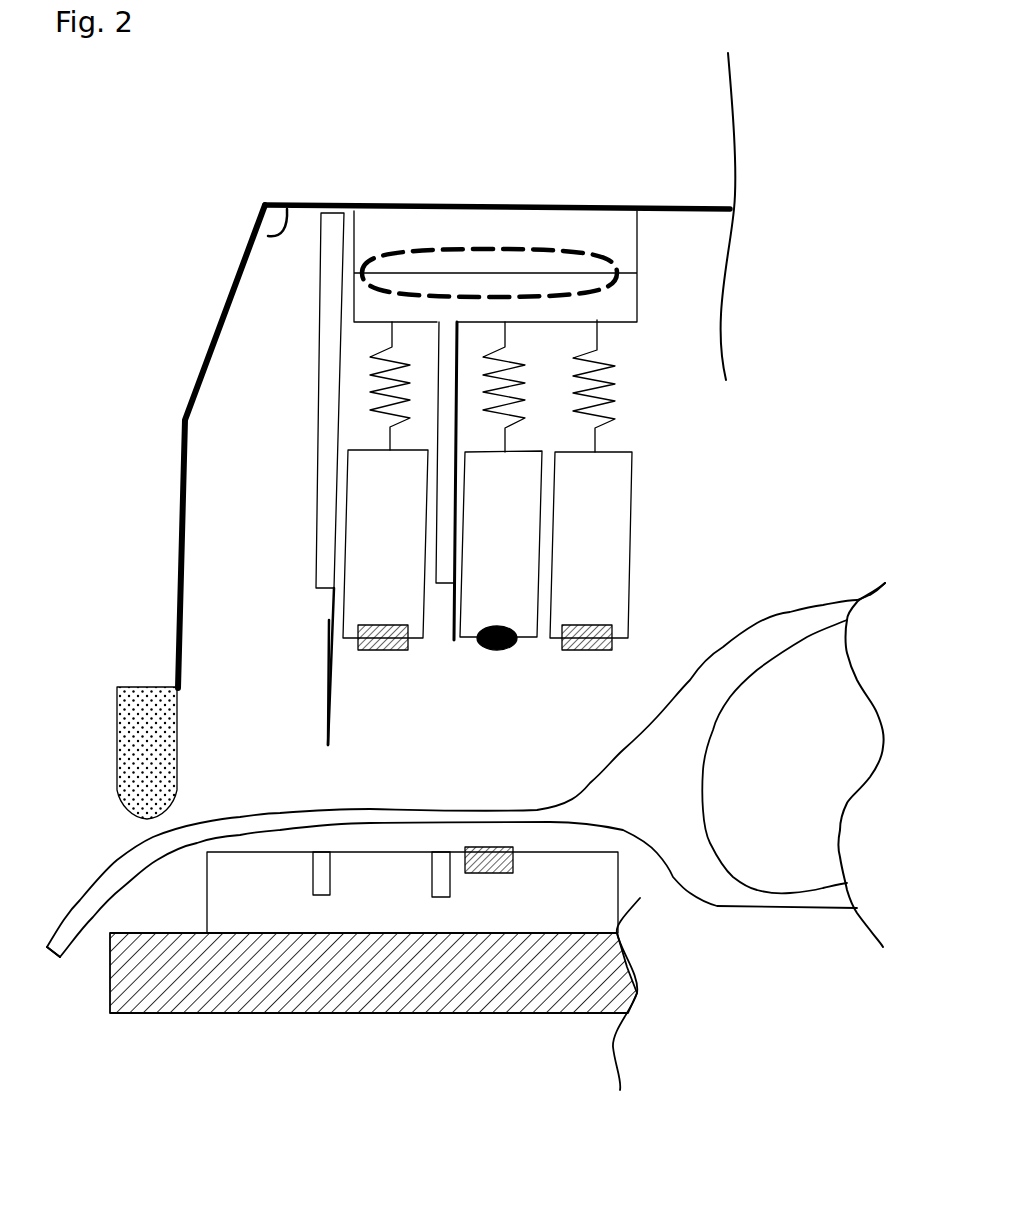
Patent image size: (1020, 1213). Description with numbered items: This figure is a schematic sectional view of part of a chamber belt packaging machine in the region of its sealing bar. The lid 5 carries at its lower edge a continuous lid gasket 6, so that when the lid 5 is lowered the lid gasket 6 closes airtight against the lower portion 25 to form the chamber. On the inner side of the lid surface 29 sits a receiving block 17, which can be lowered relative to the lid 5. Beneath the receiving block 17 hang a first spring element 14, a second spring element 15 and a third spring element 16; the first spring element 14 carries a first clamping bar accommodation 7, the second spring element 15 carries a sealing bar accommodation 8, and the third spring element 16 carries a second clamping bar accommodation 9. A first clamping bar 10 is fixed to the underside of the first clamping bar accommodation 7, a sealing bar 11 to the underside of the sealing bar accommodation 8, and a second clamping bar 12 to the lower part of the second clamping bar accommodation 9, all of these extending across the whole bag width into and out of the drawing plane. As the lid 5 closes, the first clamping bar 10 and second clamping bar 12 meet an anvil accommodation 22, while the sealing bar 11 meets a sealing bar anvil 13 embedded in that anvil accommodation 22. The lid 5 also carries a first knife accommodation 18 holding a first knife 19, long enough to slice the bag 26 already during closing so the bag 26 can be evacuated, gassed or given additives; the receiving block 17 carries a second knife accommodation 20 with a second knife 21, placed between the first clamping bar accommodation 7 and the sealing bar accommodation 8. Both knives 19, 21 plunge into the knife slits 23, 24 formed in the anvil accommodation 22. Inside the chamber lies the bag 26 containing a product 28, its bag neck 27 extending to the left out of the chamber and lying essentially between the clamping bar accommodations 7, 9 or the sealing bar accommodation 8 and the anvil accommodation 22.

The lid 5 is at (177, 642).
The lid gasket 6 is at (128, 730).
The first clamping bar accommodation 7 is at (375, 482).
The sealing bar accommodation 8 is at (515, 503).
The second clamping bar accommodation 9 is at (603, 517).
The first clamping bar 10 is at (378, 650).
The sealing bar 11 is at (492, 650).
The second clamping bar 12 is at (580, 650).
The sealing bar anvil 13 is at (490, 873).
The first spring element 14 is at (397, 393).
The second spring element 15 is at (510, 393).
The third spring element 16 is at (595, 385).
The receiving block 17 is at (617, 307).
The first knife accommodation 18 is at (325, 500).
The first knife 19 is at (328, 678).
The second knife accommodation 20 is at (437, 537).
The second knife 21 is at (448, 612).
The anvil accommodation 22 is at (262, 903).
The knife slit 23 is at (318, 880).
The knife slit 24 is at (437, 880).
The lower portion 25 is at (155, 1000).
The bag 26 is at (725, 903).
The bag neck 27 is at (65, 935).
The product 28 is at (792, 868).
The lid surface 29 is at (266, 236).